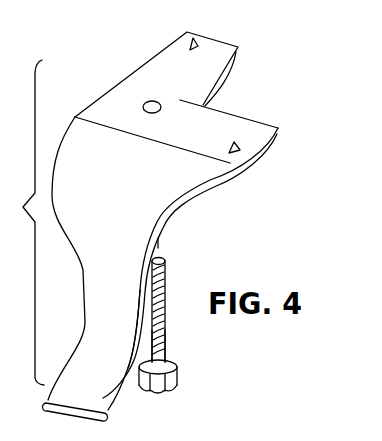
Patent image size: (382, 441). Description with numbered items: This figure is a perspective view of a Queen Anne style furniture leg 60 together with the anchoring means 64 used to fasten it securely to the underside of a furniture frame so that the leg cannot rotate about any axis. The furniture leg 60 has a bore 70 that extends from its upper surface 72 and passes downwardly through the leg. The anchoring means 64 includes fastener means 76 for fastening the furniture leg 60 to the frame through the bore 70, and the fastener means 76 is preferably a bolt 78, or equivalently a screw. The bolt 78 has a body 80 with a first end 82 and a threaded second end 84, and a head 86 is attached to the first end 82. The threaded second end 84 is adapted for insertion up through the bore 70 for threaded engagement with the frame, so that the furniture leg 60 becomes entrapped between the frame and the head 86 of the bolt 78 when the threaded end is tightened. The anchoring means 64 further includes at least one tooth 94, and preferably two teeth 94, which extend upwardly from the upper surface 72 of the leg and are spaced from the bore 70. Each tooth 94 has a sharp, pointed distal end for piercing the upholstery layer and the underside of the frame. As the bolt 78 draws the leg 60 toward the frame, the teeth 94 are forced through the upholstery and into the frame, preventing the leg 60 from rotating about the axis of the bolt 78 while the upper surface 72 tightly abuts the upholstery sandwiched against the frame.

The furniture leg 60 is at (163, 193).
The anchoring means 64 is at (190, 328).
The bore 70 is at (146, 100).
The upper surface 72 is at (209, 125).
The fastener means 76 is at (133, 391).
The bolt 78 is at (198, 304).
The body 80 is at (136, 298).
The first end 82 is at (160, 363).
The threaded second end 84 is at (162, 272).
The head 86 is at (155, 390).
The tooth 94 is at (199, 47).